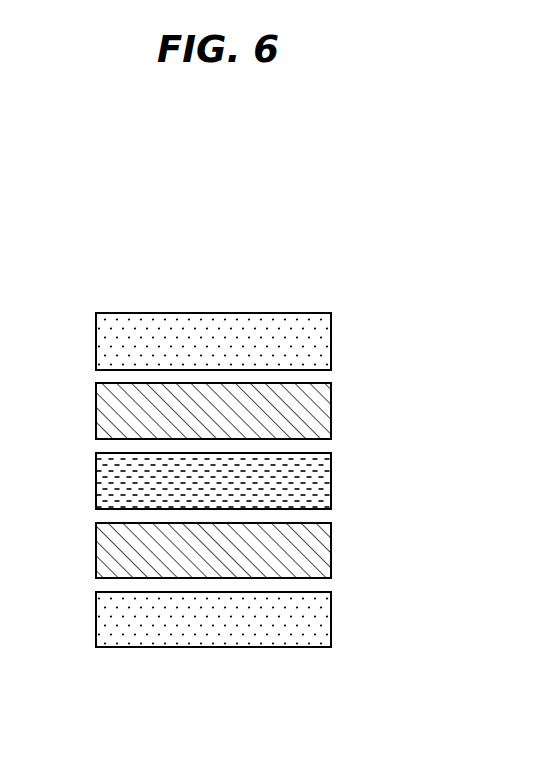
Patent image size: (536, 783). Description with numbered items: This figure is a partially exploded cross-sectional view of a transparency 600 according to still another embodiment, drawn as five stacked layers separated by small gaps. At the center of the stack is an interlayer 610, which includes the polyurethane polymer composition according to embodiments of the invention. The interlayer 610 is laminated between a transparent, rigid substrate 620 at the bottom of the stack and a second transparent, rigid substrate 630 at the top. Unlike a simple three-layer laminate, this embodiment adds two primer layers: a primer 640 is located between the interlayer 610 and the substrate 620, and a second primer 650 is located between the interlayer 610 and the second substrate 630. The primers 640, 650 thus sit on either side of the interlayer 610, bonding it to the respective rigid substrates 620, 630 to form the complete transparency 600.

The transparency 600 is at (170, 268).
The second transparent, rigid substrate 630 is at (331, 343).
The second primer 650 is at (331, 404).
The interlayer 610 is at (331, 476).
The primer 640 is at (331, 545).
The transparent, rigid substrate 620 is at (331, 620).